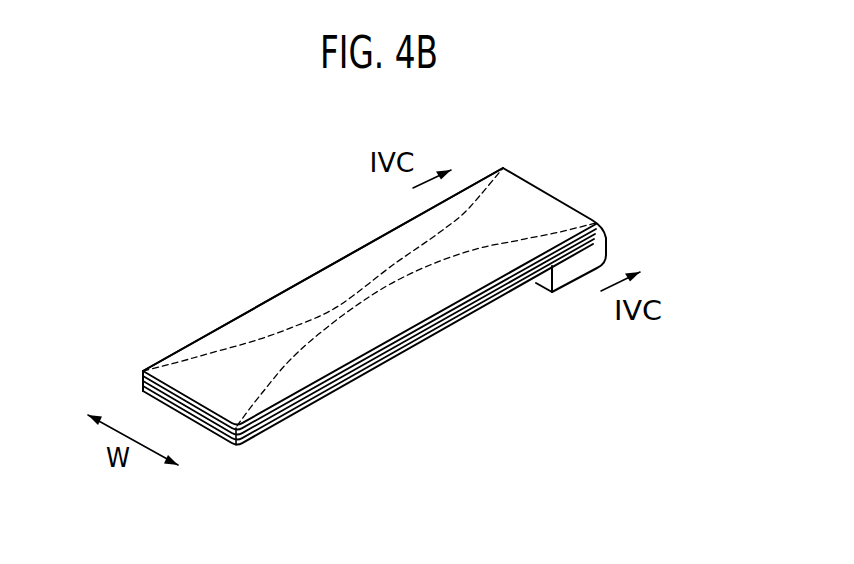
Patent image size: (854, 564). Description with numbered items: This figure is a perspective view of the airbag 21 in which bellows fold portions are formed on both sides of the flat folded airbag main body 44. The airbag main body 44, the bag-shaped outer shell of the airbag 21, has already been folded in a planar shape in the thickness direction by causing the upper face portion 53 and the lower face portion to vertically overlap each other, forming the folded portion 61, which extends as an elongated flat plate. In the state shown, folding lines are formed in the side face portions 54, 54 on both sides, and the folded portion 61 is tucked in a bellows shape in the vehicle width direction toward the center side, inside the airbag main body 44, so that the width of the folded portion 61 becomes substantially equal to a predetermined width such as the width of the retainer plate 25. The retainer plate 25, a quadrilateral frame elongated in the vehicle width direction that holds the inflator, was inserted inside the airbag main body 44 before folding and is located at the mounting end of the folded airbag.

The airbag 21 is at (374, 284).
The airbag main body 44 is at (506, 182).
The side face portion 54 is at (371, 241).
The upper face portion 53 is at (330, 273).
The folded portion 61 is at (270, 307).
The retainer plate 25 is at (574, 262).